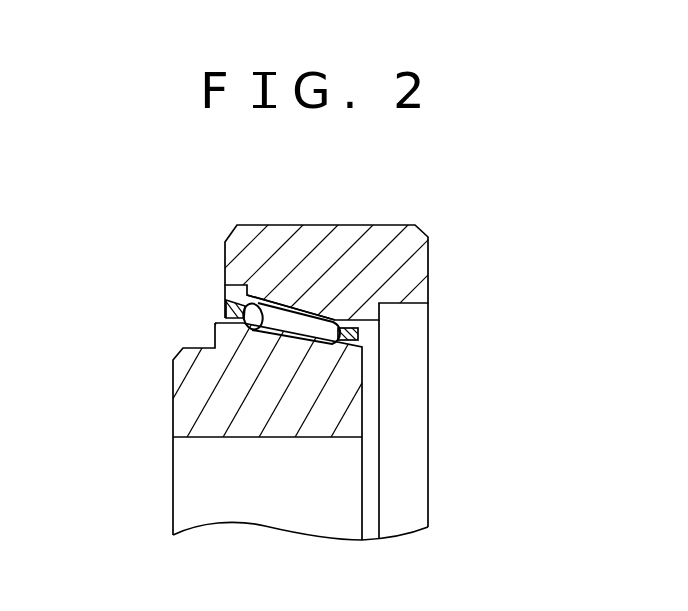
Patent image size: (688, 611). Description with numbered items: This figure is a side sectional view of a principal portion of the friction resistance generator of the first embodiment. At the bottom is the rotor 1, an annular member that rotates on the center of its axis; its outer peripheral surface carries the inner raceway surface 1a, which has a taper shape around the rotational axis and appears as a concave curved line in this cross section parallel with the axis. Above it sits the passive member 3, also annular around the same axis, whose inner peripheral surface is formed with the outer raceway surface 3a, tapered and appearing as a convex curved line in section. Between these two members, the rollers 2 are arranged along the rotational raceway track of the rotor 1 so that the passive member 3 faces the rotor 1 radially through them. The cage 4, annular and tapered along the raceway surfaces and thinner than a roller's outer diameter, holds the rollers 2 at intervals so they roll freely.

The rotor 1 is at (173, 393).
The inner raceway surface 1a is at (362, 353).
The rollers 2 is at (262, 301).
The passive member 3 is at (428, 255).
The outer raceway surface 3a is at (335, 318).
The cage 4 is at (223, 290).